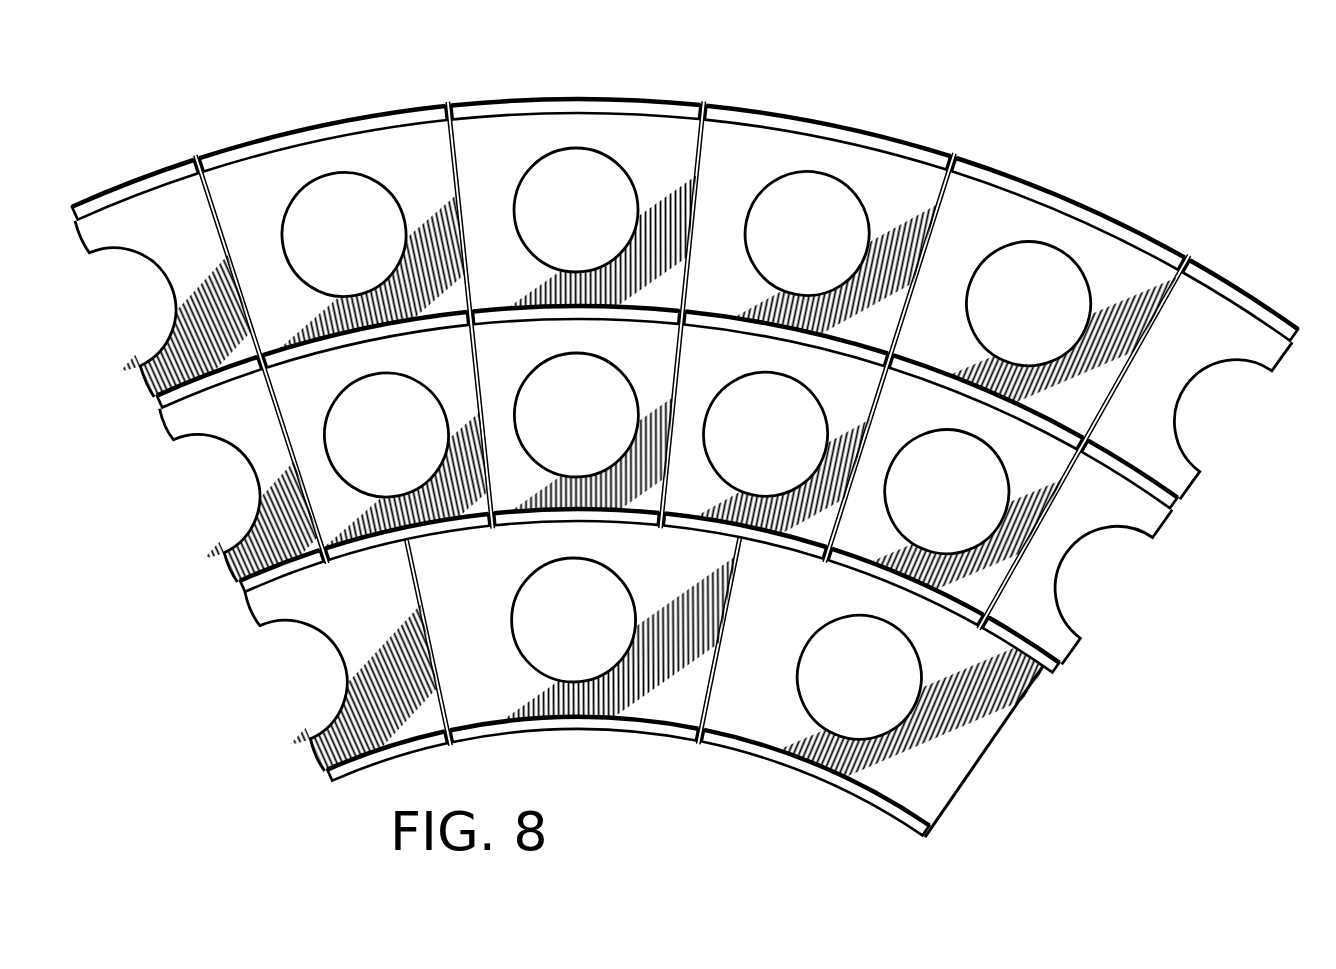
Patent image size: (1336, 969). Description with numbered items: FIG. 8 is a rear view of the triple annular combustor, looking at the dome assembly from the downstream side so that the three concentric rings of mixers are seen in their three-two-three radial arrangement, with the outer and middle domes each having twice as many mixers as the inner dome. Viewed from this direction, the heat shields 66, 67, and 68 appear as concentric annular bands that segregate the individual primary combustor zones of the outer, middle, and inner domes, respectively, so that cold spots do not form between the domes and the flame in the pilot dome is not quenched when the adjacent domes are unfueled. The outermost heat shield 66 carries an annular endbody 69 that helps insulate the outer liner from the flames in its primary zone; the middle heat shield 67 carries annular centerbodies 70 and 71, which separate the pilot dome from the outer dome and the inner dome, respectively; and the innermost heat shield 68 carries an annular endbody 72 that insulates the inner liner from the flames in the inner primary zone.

The heat shield 66 is at (675, 165).
The heat shield 67 is at (660, 362).
The heat shield 68 is at (685, 572).
The annular endbody 69 is at (867, 134).
The annular centerbody 70 is at (804, 333).
The annular centerbody 71 is at (750, 535).
The annular endbody 72 is at (667, 728).